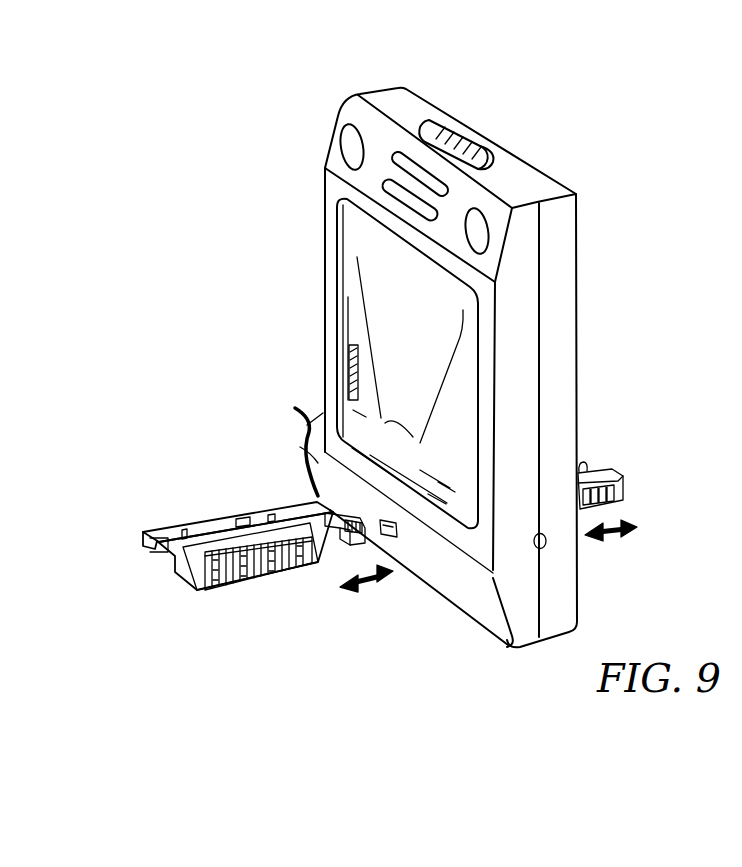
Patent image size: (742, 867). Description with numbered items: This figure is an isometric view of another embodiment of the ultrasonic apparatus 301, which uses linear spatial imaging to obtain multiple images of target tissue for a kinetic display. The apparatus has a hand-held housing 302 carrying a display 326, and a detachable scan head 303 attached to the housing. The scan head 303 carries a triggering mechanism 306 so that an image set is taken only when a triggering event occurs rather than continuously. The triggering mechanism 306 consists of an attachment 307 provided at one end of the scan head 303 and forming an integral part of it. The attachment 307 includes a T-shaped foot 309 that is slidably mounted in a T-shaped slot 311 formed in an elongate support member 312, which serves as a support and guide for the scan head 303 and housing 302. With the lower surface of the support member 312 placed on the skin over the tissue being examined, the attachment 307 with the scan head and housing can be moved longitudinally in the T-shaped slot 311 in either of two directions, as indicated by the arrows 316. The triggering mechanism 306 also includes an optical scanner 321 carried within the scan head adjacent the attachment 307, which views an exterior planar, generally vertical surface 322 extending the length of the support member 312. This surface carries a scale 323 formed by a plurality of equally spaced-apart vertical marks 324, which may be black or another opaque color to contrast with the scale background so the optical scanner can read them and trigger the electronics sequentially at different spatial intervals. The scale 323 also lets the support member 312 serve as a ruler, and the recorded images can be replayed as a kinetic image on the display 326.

The ultrasonic apparatus 301 is at (563, 155).
The housing 302 is at (286, 432).
The detachable scan head 303 is at (483, 608).
The triggering mechanism 306 is at (242, 492).
The attachment 307 is at (323, 473).
The T-shaped foot 309 is at (343, 523).
The T-shaped slot 311 is at (166, 617).
The elongate support member 312 is at (143, 548).
The arrows 316 is at (372, 588).
The optical scanner 321 is at (397, 536).
The exterior planar generally vertical surface 322 is at (283, 555).
The scale 323 is at (186, 585).
The vertical marks 324 is at (253, 552).
The display 326 is at (372, 239).